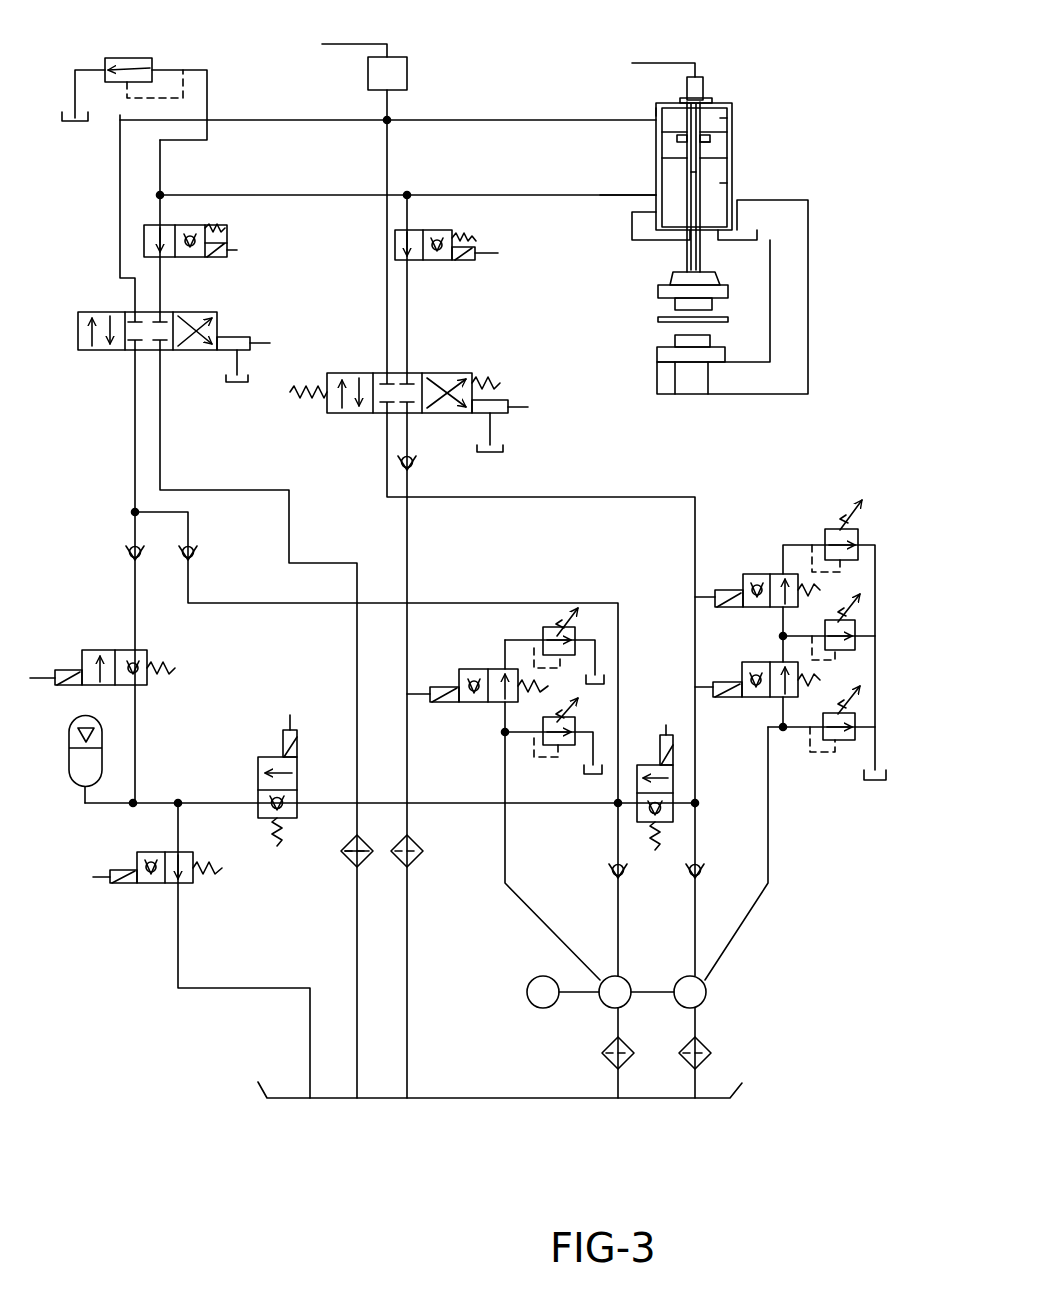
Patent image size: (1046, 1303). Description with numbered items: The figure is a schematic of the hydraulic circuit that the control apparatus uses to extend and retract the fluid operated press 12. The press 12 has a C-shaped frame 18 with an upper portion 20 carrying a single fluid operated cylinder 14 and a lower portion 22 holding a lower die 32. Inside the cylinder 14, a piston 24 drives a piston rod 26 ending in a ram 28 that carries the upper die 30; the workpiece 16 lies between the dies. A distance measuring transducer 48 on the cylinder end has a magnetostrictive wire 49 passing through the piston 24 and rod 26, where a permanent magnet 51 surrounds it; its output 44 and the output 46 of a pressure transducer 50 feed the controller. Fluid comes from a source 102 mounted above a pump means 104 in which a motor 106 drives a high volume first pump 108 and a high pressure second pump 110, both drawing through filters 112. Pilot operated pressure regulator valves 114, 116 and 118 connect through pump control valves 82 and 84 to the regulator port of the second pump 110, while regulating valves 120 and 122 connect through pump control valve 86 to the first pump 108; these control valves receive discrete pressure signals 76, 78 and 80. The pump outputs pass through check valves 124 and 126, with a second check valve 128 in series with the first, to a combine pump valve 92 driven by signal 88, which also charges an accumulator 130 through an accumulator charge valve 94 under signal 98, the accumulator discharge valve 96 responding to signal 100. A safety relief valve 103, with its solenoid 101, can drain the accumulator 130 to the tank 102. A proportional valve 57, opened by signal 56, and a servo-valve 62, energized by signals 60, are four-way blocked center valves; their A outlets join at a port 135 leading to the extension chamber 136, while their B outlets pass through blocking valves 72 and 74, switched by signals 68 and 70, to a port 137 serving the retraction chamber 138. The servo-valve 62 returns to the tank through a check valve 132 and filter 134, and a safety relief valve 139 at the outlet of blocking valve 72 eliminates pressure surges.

The fluid operated press 12 is at (645, 265).
The fluid operated cylinder 14 is at (665, 183).
The workpiece 16 is at (658, 320).
The frame 18 is at (790, 203).
The upper portion 20 is at (632, 228).
The lower portion 22 is at (658, 356).
The piston 24 is at (670, 145).
The piston rod 26 is at (703, 262).
The ram 28 is at (658, 280).
The upper die 30 is at (675, 303).
The lower die 32 is at (660, 340).
The output of distance measuring transducer 44 is at (632, 63).
The output of pressure transducer 46 is at (322, 44).
The distance measuring transducer 48 is at (700, 80).
The elongated wire 49 is at (695, 172).
The pressure transducer 50 is at (368, 76).
The permanent magnet 51 is at (710, 142).
The control signal to proportional valve 56 is at (258, 340).
The proportional valve 57 is at (190, 312).
The control signal to servo-valve 60 is at (515, 405).
The servo-valve 62 is at (340, 373).
The output signal to blocking valve 68 is at (490, 253).
The output signal to blocking valve 70 is at (237, 250).
The blocking valve 72 is at (215, 225).
The blocking valve 74 is at (430, 230).
The pressure signal 76 is at (697, 597).
The pressure signal 78 is at (700, 688).
The pressure signal 80 is at (425, 695).
The pump control valve 82 is at (760, 574).
The pump control valve 84 is at (760, 662).
The pump control valve 86 is at (480, 703).
The output signal to combine pump flow valve 88 is at (666, 725).
The combine pump valve 92 is at (637, 778).
The accumulator charge valve 94 is at (258, 795).
The accumulator discharge valve 96 is at (100, 650).
The control signal to charge valve 98 is at (290, 715).
The control signal to discharge valve 100 is at (55, 672).
The solenoid 101 is at (100, 882).
The source of fluid 102 is at (437, 1100).
The safety relief valve 103 is at (150, 885).
The pump means 104 is at (560, 966).
The motor 106 is at (540, 1008).
The first pump 108 is at (624, 1005).
The second pump 110 is at (700, 1005).
The filter 112 is at (703, 1060).
The first pressure regulator valve 114 is at (825, 530).
The second pressure regulator valve 116 is at (855, 620).
The third pressure regulator valve 118 is at (855, 713).
The pressure regulating valve 120 is at (545, 626).
The pressure regulating valve 122 is at (545, 745).
The check valve 124 is at (612, 868).
The check valve 126 is at (720, 855).
The second check valve 128 is at (194, 557).
The accumulator 130 is at (85, 790).
The check valve 132 is at (415, 462).
The filter 134 is at (402, 867).
The port 135 is at (656, 115).
The extension chamber 136 is at (720, 118).
The port 137 is at (640, 197).
The retraction chamber 138 is at (720, 183).
The safety relief valve 139 is at (150, 62).